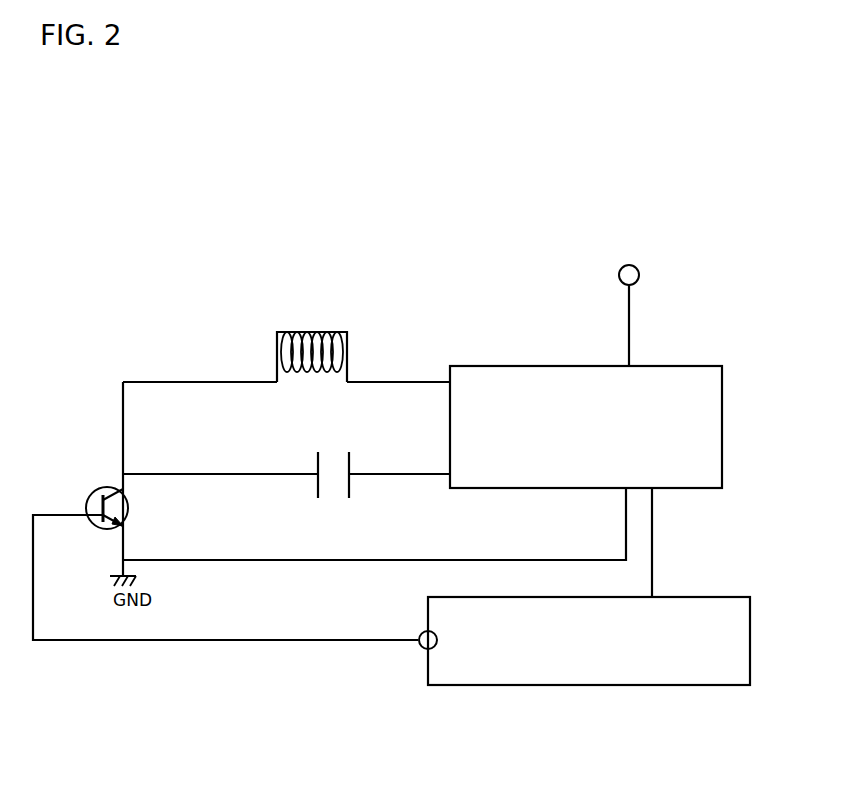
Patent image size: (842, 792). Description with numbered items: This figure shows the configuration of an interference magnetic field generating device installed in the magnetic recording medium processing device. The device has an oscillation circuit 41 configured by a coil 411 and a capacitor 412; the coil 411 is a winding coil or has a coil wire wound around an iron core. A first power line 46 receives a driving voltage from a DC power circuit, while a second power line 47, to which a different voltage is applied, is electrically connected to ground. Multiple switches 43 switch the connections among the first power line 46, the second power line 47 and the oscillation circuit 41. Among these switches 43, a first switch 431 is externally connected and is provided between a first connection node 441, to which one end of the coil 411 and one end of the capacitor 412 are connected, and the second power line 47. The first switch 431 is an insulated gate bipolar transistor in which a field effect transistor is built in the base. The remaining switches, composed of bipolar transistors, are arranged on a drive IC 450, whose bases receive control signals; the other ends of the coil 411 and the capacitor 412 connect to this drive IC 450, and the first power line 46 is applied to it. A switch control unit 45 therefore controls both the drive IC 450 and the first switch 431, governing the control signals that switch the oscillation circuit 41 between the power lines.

The oscillation circuit 41 is at (252, 384).
The coil 411 is at (277, 332).
The capacitor 412 is at (313, 470).
The first connection node 441 is at (123, 474).
The first switch 431 is at (129, 503).
The switches 43 is at (158, 508).
The second power line 47 is at (155, 560).
The drive IC 450 is at (522, 366).
The first power line 46 is at (629, 320).
The switch control unit 45 is at (553, 686).